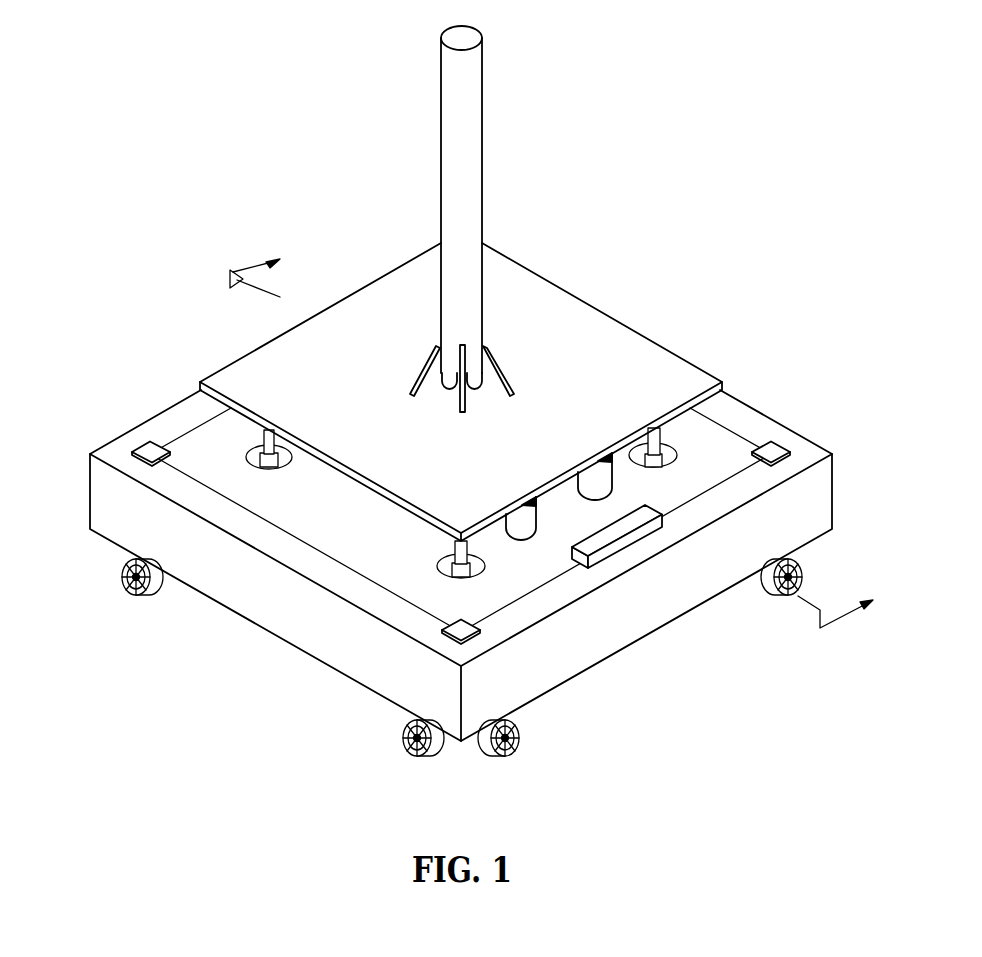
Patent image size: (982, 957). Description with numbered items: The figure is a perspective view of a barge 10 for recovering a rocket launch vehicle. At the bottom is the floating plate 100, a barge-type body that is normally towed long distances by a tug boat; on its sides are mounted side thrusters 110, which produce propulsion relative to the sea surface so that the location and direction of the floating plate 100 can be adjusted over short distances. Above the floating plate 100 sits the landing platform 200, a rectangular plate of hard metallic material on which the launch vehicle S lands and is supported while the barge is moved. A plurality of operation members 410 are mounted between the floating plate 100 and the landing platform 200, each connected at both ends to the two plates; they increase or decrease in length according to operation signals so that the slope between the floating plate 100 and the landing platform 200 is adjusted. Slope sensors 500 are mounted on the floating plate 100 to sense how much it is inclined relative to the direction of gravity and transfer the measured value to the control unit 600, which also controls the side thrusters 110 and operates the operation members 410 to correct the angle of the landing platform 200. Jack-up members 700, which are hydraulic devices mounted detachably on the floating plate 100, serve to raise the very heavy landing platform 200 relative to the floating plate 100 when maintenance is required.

The support apparatus 10 is at (160, 492).
The floating plate 100 is at (282, 623).
The side thruster 110 is at (132, 593).
The landing platform 200 is at (570, 310).
The operation member 410 is at (262, 432).
The slope sensor 500 is at (773, 445).
The control unit 600 is at (620, 547).
The jack-up member 700 is at (603, 483).
The launch vehicle S is at (472, 112).